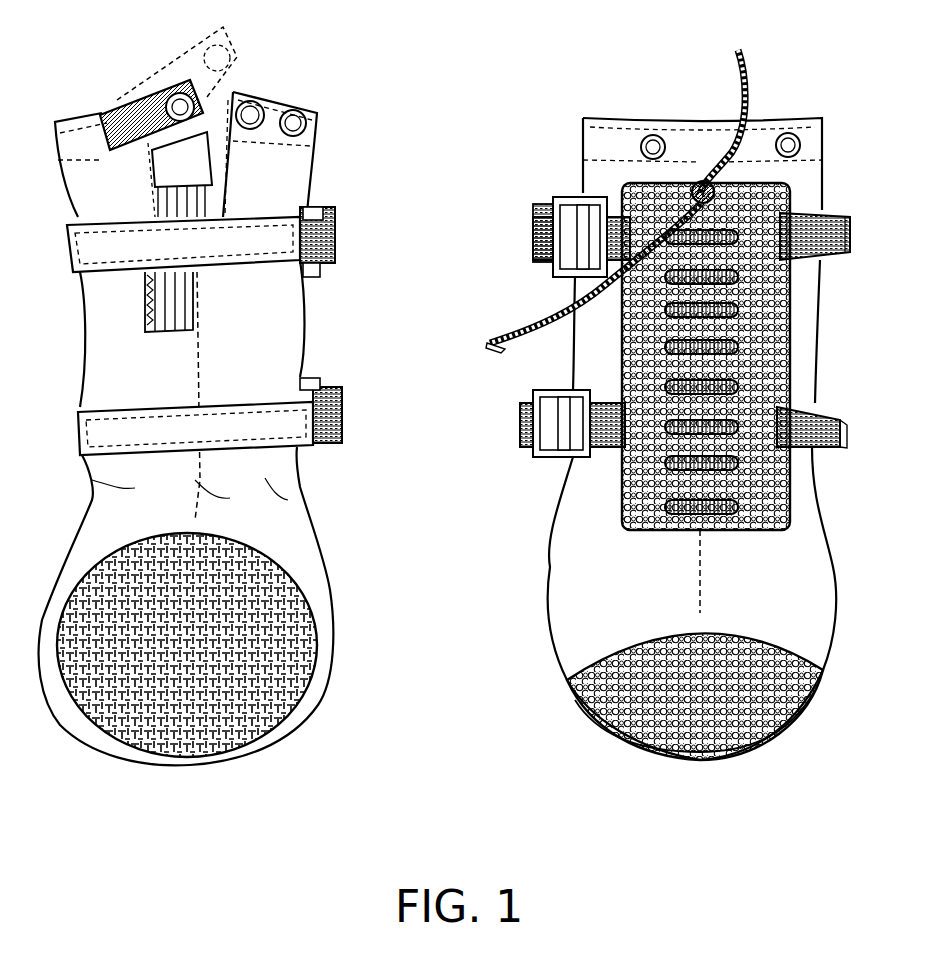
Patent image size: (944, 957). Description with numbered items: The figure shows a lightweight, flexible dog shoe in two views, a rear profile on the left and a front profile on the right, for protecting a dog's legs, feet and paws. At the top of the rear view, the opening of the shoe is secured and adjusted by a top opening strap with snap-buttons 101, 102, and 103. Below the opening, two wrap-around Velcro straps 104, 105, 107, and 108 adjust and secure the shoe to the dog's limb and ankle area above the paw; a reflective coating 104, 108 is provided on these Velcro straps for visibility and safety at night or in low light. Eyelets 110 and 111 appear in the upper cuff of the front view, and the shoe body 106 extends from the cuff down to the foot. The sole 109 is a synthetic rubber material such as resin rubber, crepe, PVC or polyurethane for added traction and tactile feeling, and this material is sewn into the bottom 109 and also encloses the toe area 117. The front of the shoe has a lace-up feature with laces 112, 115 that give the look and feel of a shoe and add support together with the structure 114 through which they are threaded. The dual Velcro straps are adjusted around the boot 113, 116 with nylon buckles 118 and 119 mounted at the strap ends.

The top opening strap snap-button 101 is at (180, 105).
The top opening strap snap-button 102 is at (252, 113).
The top opening strap snap-button 103 is at (293, 125).
The Velcro strap 104 is at (237, 235).
The Velcro strap 105 is at (328, 230).
The boot upper body 106 is at (253, 337).
The Velcro strap 107 is at (342, 415).
The Velcro strap 108 is at (247, 425).
The sole 109 is at (227, 688).
The first eyelet 110 is at (653, 147).
The second eyelet 111 is at (788, 145).
The laces 112 is at (710, 195).
The boot 113 is at (823, 252).
The structure 114 is at (752, 317).
The laces 115 is at (730, 387).
The boot 116 is at (810, 415).
The toe area 117 is at (660, 687).
The nylon buckle 118 is at (580, 452).
The nylon buckle 119 is at (567, 273).